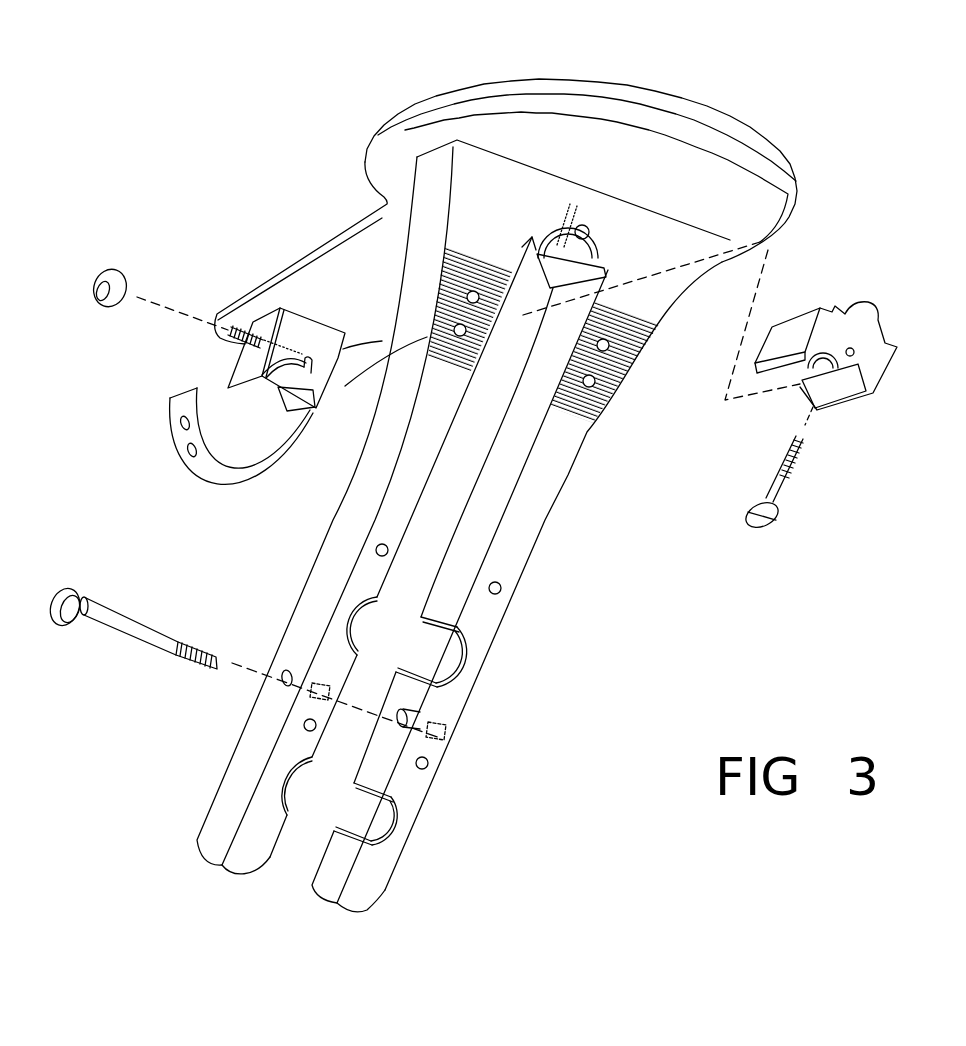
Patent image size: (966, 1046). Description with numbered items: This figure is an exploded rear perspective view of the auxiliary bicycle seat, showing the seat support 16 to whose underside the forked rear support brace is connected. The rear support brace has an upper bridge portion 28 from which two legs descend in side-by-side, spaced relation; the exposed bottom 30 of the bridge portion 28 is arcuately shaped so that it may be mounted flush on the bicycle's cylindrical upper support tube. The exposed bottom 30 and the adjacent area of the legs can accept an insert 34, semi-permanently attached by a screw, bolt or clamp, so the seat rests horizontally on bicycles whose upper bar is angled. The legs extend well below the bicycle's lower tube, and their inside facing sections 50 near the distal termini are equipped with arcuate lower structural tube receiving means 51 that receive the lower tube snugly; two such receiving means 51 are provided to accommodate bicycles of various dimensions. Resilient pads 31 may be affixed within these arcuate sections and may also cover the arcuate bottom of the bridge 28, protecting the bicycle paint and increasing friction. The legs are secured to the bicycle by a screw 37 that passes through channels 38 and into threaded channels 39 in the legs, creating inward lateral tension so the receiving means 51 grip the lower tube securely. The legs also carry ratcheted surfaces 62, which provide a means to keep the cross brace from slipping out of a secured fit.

The seat support 16 is at (792, 192).
The upper bridge portion 28 is at (480, 180).
The exposed bottom 30 is at (578, 253).
The resilient pads 31 is at (550, 287).
The insert 34 is at (884, 322).
The screw 37 is at (78, 627).
The channels 38 is at (285, 670).
The threaded channels 39 is at (420, 712).
The inside facing sections 50 is at (450, 418).
The arcuate lower structural tube receiving means 51 is at (461, 640).
The ratcheted surfaces 62 is at (365, 343).